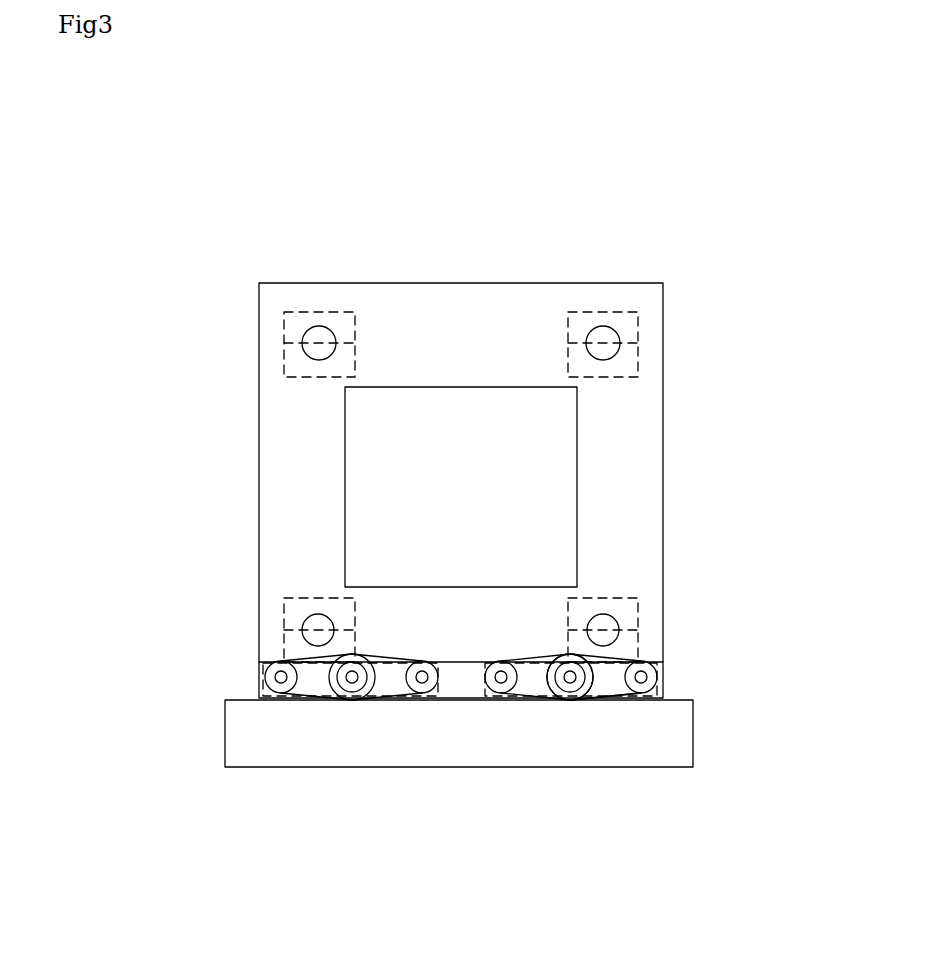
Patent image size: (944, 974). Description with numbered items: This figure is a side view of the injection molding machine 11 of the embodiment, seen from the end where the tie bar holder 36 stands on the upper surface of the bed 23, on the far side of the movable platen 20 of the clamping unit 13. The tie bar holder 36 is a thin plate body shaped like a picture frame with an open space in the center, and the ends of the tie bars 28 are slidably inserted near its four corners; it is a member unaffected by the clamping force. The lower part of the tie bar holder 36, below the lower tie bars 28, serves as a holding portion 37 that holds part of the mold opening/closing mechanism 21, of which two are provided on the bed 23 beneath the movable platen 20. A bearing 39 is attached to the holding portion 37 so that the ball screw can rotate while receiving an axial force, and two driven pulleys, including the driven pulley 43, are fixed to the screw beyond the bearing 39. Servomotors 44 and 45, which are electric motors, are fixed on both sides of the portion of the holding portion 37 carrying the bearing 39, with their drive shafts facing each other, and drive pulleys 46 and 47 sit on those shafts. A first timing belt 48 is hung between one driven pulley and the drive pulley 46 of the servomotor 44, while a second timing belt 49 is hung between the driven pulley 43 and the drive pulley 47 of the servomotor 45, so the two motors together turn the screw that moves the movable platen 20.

The injection molding machine 11 is at (501, 205).
The clamping unit 13 is at (395, 243).
The movable platen 20 is at (395, 465).
The mold opening/closing mechanism 21 is at (319, 703).
The bed 23 is at (248, 712).
The tie bars 28 is at (319, 343).
The tie bar holder 36 is at (531, 310).
The holding portion 37 is at (319, 677).
The bearing 39 is at (568, 688).
The driven pulley 43 is at (585, 695).
The servomotor 44 is at (485, 690).
The servomotor 45 is at (272, 688).
The drive pulley 46 is at (502, 690).
The drive pulley 47 is at (648, 681).
The timing belt 48 is at (538, 695).
The timing belt 49 is at (612, 693).